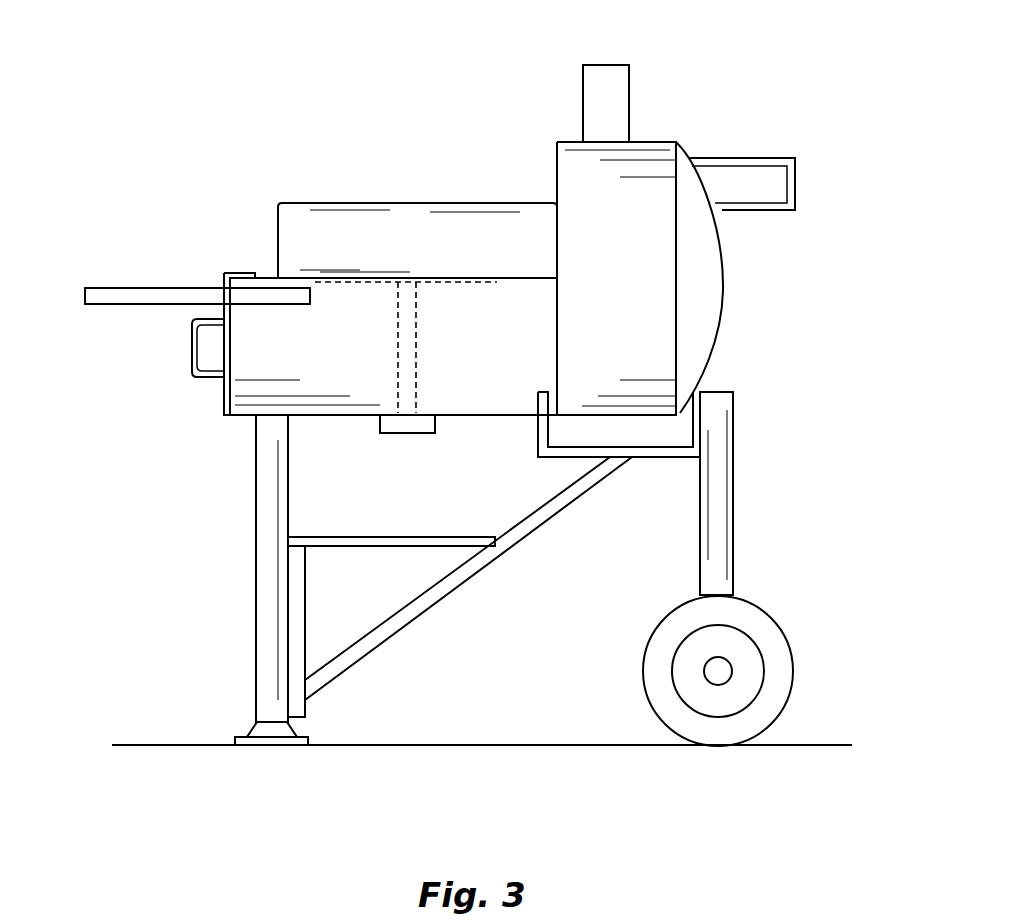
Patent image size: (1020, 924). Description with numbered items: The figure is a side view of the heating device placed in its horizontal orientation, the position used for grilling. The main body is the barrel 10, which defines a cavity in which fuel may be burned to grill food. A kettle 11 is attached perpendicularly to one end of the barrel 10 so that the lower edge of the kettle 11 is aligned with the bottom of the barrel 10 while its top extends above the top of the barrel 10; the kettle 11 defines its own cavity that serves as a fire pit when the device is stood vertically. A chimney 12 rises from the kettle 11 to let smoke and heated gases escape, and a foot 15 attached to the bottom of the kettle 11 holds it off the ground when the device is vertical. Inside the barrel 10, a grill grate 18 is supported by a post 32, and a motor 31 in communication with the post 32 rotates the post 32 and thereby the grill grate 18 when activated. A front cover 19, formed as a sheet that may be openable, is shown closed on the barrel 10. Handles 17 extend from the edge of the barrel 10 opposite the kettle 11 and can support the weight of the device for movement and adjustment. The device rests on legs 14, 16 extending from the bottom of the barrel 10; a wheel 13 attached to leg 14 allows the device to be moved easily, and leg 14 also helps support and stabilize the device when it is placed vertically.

The barrel 10 is at (372, 302).
The kettle 11 is at (722, 278).
The chimney 12 is at (583, 91).
The wheel 13 is at (775, 618).
The leg 14 is at (733, 483).
The foot 15 is at (752, 158).
The leg 16 is at (255, 645).
The handle 17 is at (157, 288).
The grill grate 18 is at (480, 282).
The front cover 19 is at (227, 388).
The motor 31 is at (423, 433).
The post 32 is at (416, 323).